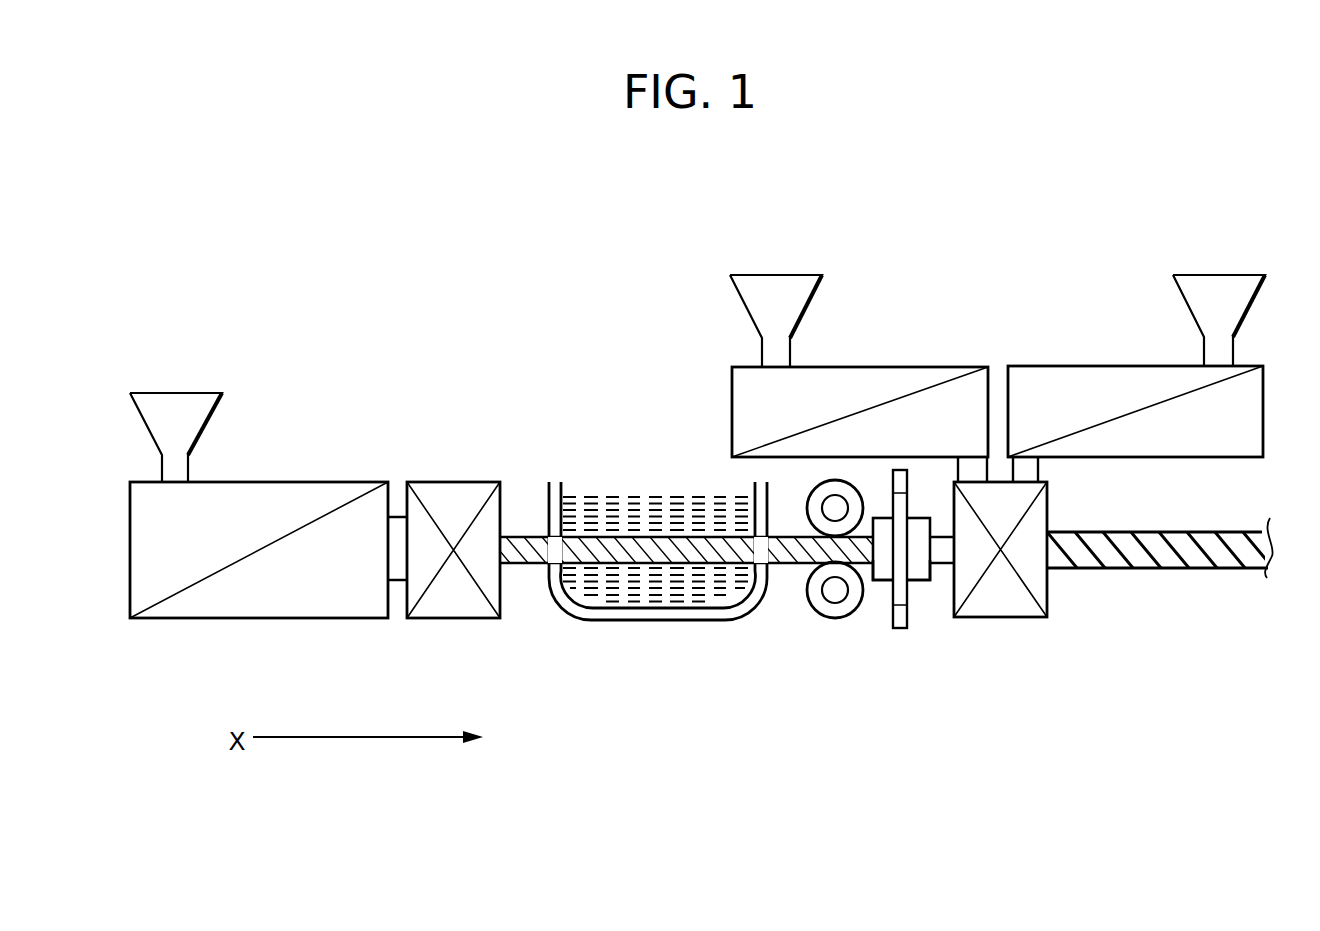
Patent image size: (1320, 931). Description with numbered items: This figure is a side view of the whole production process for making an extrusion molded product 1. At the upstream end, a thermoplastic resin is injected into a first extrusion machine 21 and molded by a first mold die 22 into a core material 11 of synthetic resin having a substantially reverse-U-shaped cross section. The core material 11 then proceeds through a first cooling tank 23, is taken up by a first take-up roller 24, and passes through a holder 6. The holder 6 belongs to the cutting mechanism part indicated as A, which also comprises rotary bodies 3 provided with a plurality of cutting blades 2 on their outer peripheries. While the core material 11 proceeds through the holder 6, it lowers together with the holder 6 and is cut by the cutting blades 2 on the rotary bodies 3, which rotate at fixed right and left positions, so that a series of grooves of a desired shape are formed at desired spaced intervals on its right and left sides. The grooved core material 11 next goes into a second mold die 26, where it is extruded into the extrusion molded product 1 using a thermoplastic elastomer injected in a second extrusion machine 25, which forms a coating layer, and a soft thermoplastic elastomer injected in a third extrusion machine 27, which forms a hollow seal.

The extrusion molded product 1 is at (1177, 553).
The cutting blades 2 is at (900, 476).
The rotary bodies 3 is at (900, 548).
The holder 6 is at (882, 576).
The core material 11 is at (523, 546).
The first extrusion machine 21 is at (250, 502).
The first mold die 22 is at (435, 502).
The first cooling tank 23 is at (610, 506).
The first take-up roller 24 is at (830, 612).
The second extrusion machine 25 is at (863, 387).
The second mold die 26 is at (1022, 608).
The third extrusion machine 27 is at (1100, 387).
The cutting mechanism part A is at (907, 645).